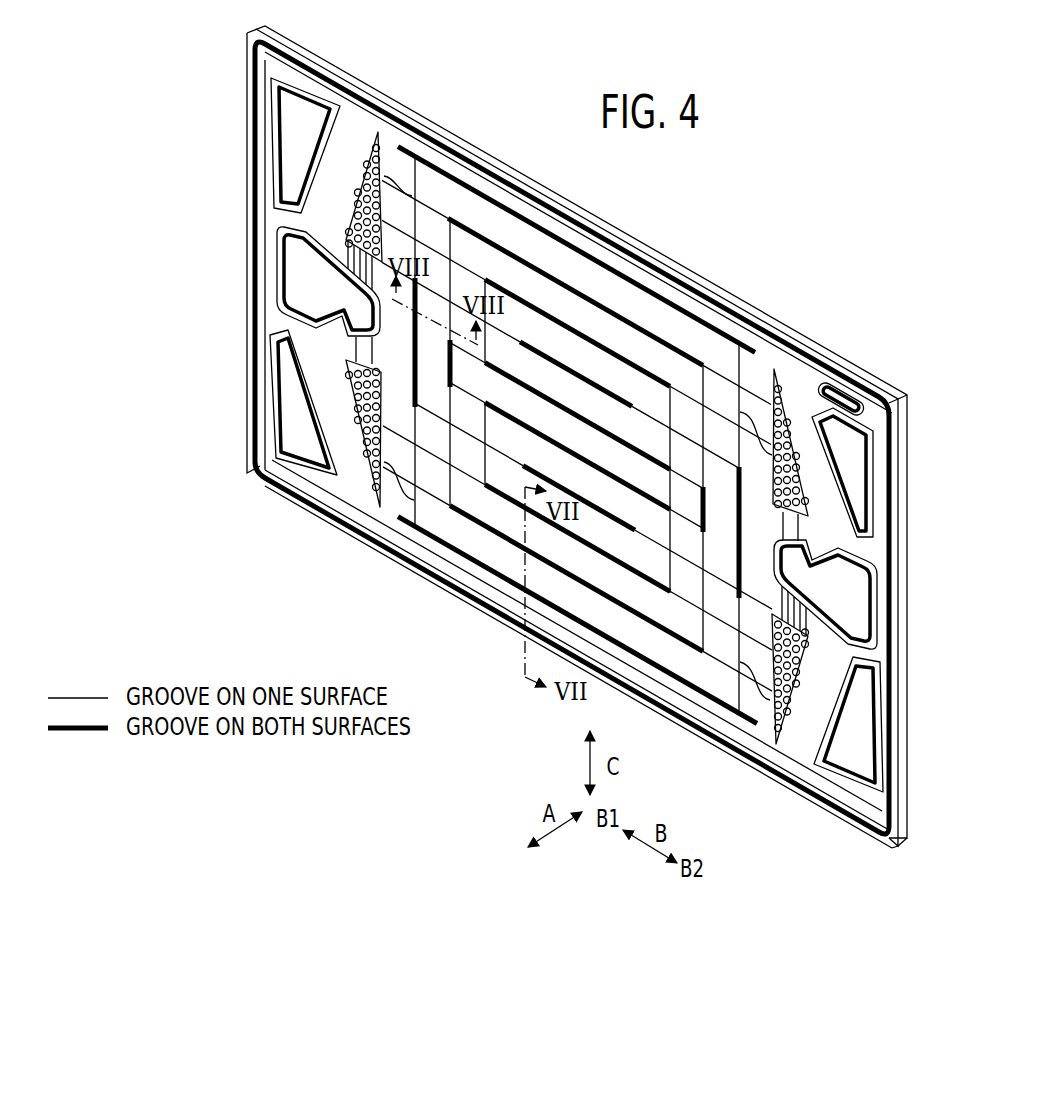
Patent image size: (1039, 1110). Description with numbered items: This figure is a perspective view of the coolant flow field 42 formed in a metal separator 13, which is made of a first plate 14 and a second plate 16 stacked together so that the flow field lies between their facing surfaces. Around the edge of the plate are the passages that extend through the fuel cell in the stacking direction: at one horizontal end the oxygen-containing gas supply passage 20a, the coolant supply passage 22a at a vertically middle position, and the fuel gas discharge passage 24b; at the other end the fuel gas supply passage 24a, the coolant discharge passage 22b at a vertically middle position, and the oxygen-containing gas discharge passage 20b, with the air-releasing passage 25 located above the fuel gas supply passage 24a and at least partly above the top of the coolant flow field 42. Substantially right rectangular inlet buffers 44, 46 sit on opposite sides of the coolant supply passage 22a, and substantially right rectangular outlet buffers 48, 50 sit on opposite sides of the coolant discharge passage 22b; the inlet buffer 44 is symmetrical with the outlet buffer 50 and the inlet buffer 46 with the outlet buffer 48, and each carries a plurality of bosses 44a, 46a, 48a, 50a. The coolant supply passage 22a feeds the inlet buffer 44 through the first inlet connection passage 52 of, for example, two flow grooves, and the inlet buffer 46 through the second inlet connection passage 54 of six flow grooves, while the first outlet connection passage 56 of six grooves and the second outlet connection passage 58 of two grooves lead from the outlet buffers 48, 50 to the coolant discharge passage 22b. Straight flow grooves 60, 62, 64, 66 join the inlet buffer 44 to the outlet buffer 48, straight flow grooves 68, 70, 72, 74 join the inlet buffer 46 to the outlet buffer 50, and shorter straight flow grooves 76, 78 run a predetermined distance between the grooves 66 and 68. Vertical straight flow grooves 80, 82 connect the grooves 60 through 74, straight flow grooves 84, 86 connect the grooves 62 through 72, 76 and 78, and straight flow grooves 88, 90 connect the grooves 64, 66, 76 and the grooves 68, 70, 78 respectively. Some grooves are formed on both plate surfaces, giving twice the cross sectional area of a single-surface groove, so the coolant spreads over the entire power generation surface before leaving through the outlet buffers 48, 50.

The metal separator 13 is at (968, 428).
The first plate 14 is at (898, 450).
The second plate 16 is at (905, 423).
The oxygen-containing gas supply passage 20a is at (293, 134).
The oxygen-containing gas discharge passage 20b is at (857, 718).
The coolant supply passage 22a is at (328, 281).
The coolant discharge passage 22b is at (825, 594).
The fuel gas supply passage 24a is at (862, 493).
The fuel gas discharge passage 24b is at (293, 416).
The air-releasing passage 25 is at (848, 398).
The coolant flow field 42 is at (776, 265).
The inlet buffer 44 is at (370, 468).
The bosses 44a is at (384, 494).
The inlet buffer 46 is at (368, 176).
The bosses 46a is at (384, 198).
The outlet buffer 48 is at (785, 695).
The bosses 48a is at (772, 697).
The outlet buffer 50 is at (782, 396).
The bosses 50a is at (757, 420).
The first inlet connection passage 52 is at (353, 344).
The second inlet connection passage 54 is at (352, 264).
The first outlet connection passage 56 is at (782, 601).
The second outlet connection passage 58 is at (783, 522).
The straight flow groove 60 is at (597, 631).
The straight flow groove 62 is at (597, 591).
The straight flow groove 64 is at (597, 550).
The straight flow groove 66 is at (597, 509).
The straight flow groove 68 is at (597, 387).
The straight flow groove 70 is at (597, 345).
The straight flow groove 72 is at (597, 306).
The straight flow groove 74 is at (578, 246).
The straight flow groove 76 is at (597, 468).
The straight flow groove 78 is at (597, 428).
The straight flow groove 80 is at (413, 331).
The straight flow groove 82 is at (740, 540).
The straight flow groove 84 is at (449, 356).
The straight flow groove 86 is at (702, 508).
The straight flow groove 88 is at (487, 346).
The straight flow groove 90 is at (666, 448).